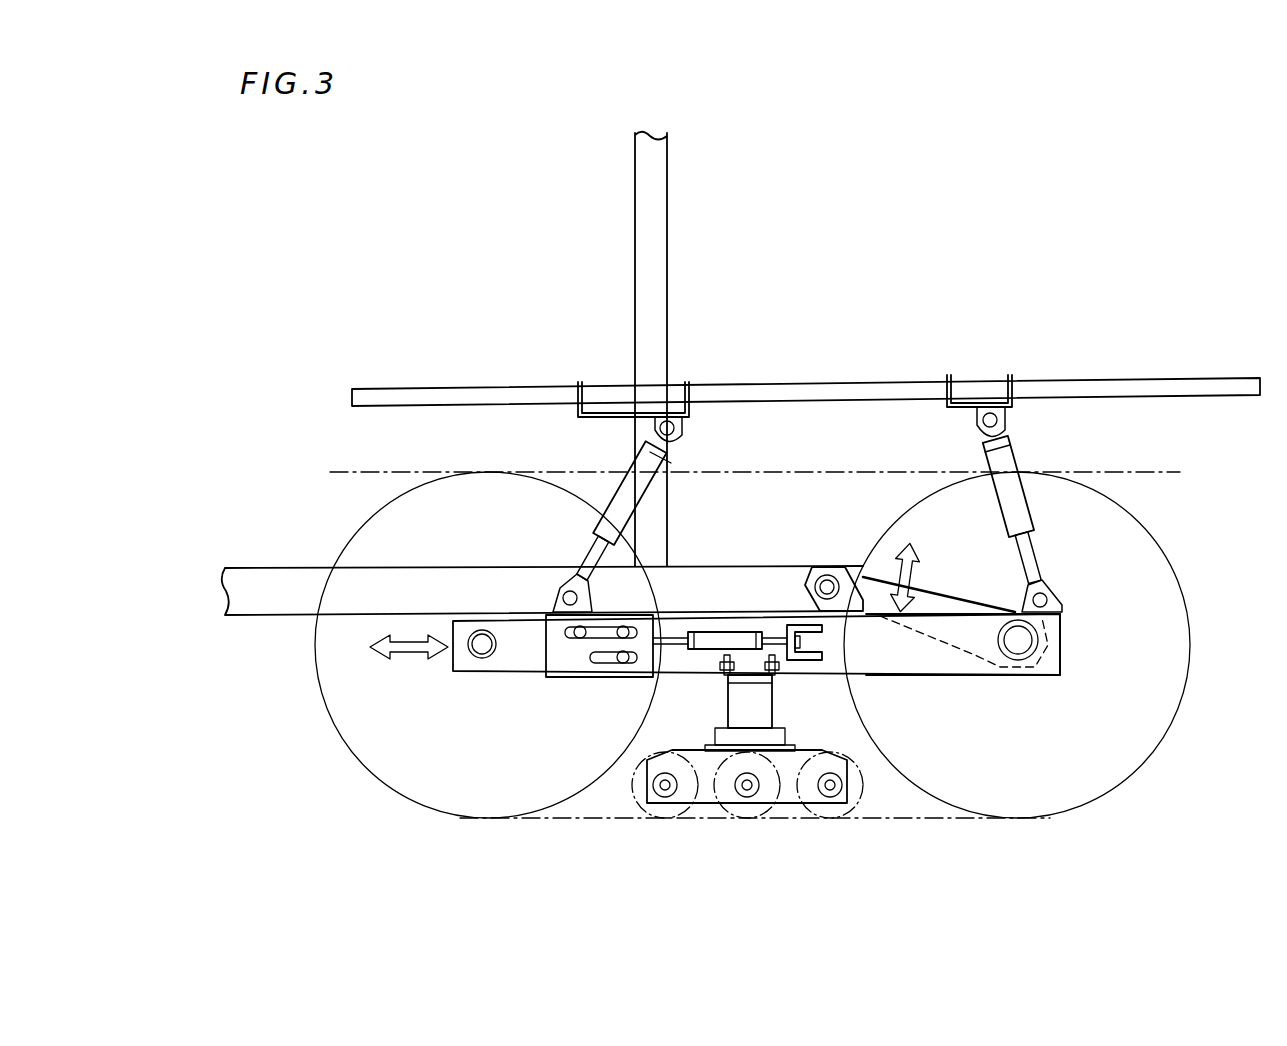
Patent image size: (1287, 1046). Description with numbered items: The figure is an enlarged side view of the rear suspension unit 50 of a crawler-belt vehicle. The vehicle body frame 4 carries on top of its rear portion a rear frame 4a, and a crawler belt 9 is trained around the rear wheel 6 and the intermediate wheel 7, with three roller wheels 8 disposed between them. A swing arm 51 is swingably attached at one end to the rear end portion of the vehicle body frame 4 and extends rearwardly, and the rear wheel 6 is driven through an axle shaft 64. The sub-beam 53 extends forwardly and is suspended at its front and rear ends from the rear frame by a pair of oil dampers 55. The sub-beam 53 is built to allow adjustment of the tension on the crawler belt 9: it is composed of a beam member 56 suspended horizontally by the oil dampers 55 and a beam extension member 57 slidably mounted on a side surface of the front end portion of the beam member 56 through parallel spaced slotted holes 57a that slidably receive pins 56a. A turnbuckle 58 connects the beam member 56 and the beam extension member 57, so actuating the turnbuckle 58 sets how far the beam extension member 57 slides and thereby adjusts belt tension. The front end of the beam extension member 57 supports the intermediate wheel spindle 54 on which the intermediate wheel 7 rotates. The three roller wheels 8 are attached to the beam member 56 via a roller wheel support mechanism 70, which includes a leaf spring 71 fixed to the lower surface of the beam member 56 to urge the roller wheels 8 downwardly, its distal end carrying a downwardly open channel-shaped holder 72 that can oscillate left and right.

The rear suspension unit 50 is at (939, 256).
The rear frame 4a is at (460, 397).
The vehicle body frame 4 is at (283, 580).
The crawler belt 9 is at (855, 468).
The intermediate wheel 7 is at (490, 810).
The rear wheel 6 is at (1025, 815).
The oil damper 55 is at (625, 495).
The beam extension member 57 is at (525, 635).
The intermediate wheel spindle 54 is at (482, 658).
The slotted holes 57a is at (582, 640).
The pins 56a is at (623, 665).
The turnbuckle 58 is at (722, 630).
The roller wheel support mechanism 70 is at (713, 720).
The leaf spring 71 is at (762, 712).
The holder 72 is at (790, 795).
The roller wheels 8 is at (668, 818).
The swing arm 51 is at (940, 598).
The beam member 56 is at (920, 668).
The sub-beam 53 is at (981, 690).
The axle shaft 64 is at (1022, 655).